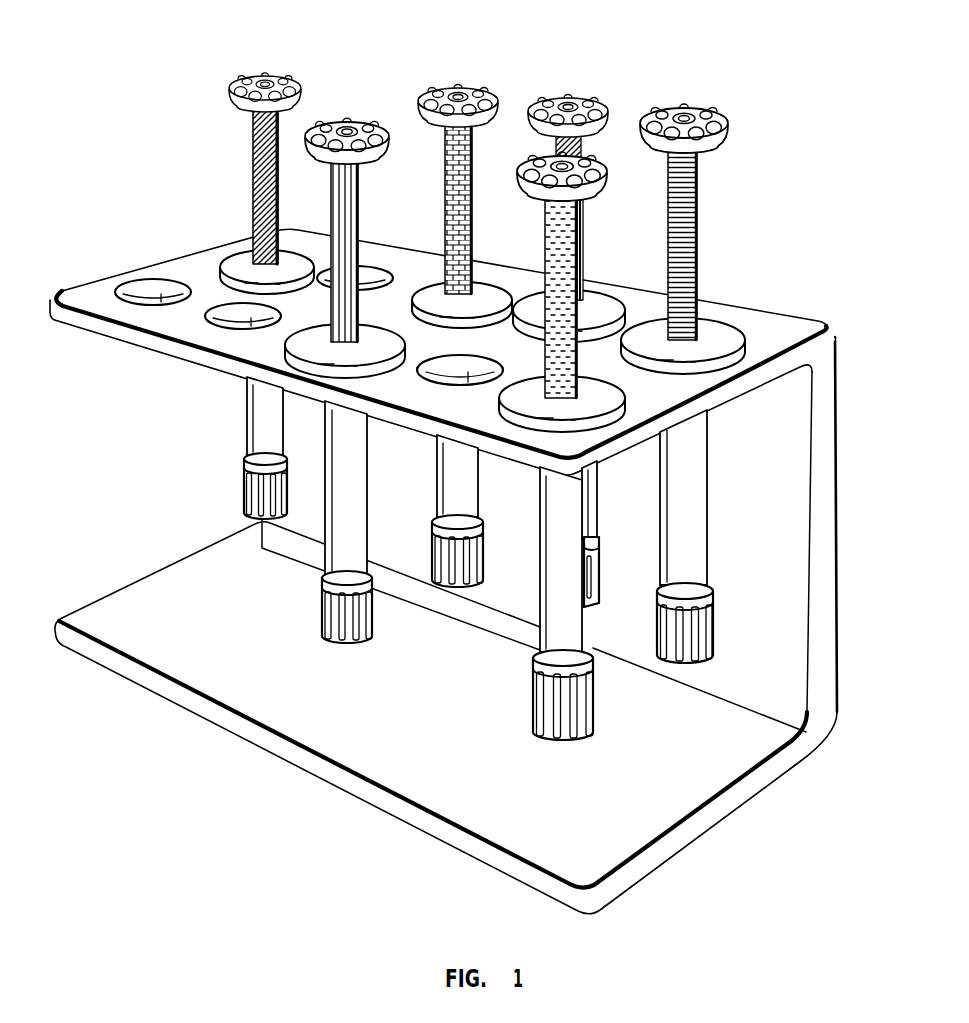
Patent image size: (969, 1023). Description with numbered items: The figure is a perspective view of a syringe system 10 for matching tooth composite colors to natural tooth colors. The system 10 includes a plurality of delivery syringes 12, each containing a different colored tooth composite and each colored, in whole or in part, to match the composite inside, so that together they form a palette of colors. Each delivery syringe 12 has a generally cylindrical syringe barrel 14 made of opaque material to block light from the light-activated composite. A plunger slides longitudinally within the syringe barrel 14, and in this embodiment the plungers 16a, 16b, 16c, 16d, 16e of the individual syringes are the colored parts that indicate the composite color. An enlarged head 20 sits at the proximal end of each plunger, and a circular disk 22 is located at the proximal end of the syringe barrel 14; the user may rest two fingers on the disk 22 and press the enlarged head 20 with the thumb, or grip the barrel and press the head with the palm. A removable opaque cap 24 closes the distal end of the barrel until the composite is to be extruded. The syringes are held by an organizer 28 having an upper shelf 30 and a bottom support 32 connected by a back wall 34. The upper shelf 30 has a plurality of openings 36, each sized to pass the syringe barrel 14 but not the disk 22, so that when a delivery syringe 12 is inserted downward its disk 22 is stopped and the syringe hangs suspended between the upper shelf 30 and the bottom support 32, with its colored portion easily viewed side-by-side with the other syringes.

The syringe system 10 is at (466, 544).
The delivery syringe 12 is at (437, 400).
The syringe barrel 14 is at (337, 527).
The plunger 16a is at (692, 232).
The plunger 16b is at (567, 268).
The plunger 16c is at (477, 212).
The plunger 16d is at (348, 217).
The plunger 16e is at (250, 170).
The enlarged head 20 is at (290, 78).
The circular disk 22 is at (296, 254).
The removable opaque cap 24 is at (244, 500).
The organizer 28 is at (813, 524).
The upper shelf 30 is at (442, 326).
The bottom support 32 is at (319, 708).
The back wall 34 is at (772, 574).
The opening 36 is at (207, 313).